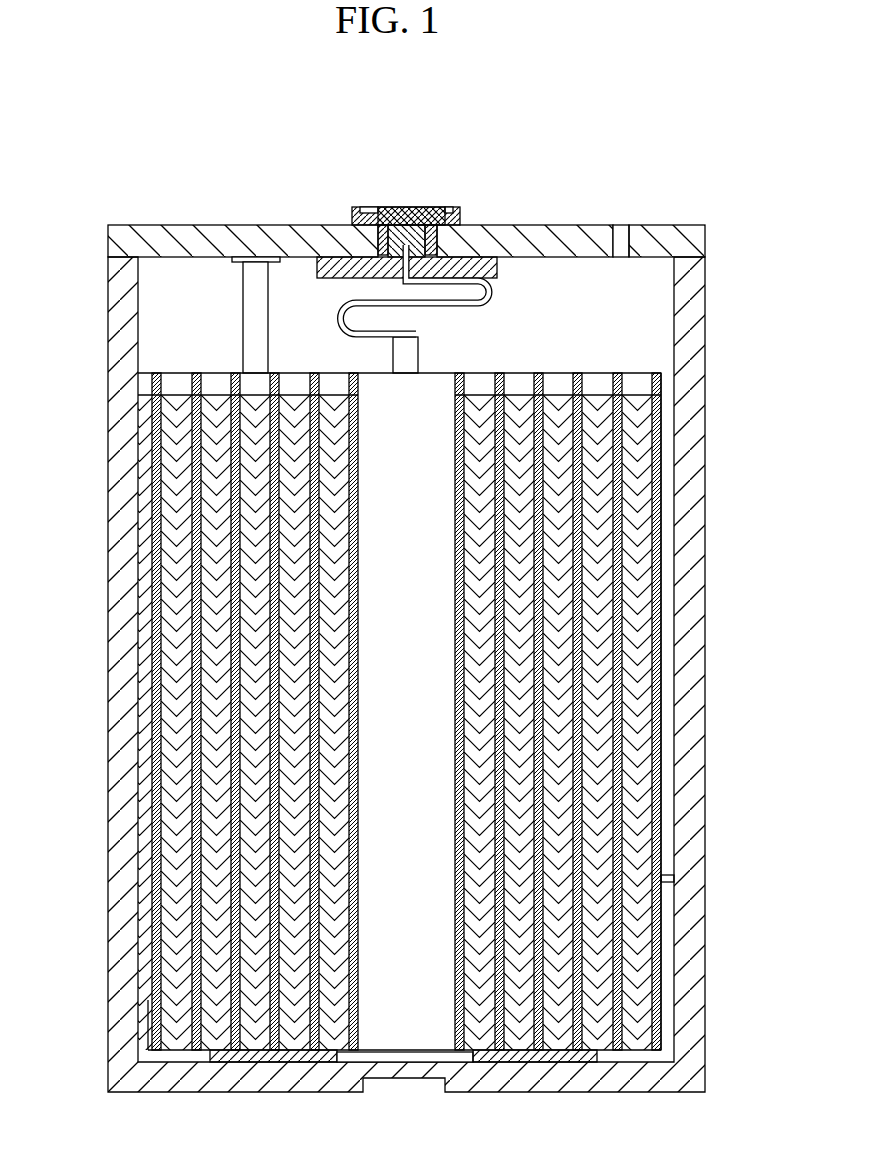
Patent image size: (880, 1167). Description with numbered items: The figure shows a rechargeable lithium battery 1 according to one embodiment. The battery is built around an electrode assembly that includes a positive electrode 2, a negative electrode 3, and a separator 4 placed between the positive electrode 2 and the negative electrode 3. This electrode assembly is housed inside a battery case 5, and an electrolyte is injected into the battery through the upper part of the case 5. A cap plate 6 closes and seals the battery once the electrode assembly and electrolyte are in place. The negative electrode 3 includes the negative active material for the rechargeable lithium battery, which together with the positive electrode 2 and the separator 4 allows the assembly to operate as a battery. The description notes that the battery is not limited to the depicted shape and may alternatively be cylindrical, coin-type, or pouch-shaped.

The rechargeable lithium battery 1 is at (606, 171).
The positive electrode 2 is at (633, 920).
The negative electrode 3 is at (212, 937).
The separator 4 is at (192, 990).
The battery case 5 is at (122, 327).
The cap plate 6 is at (456, 207).